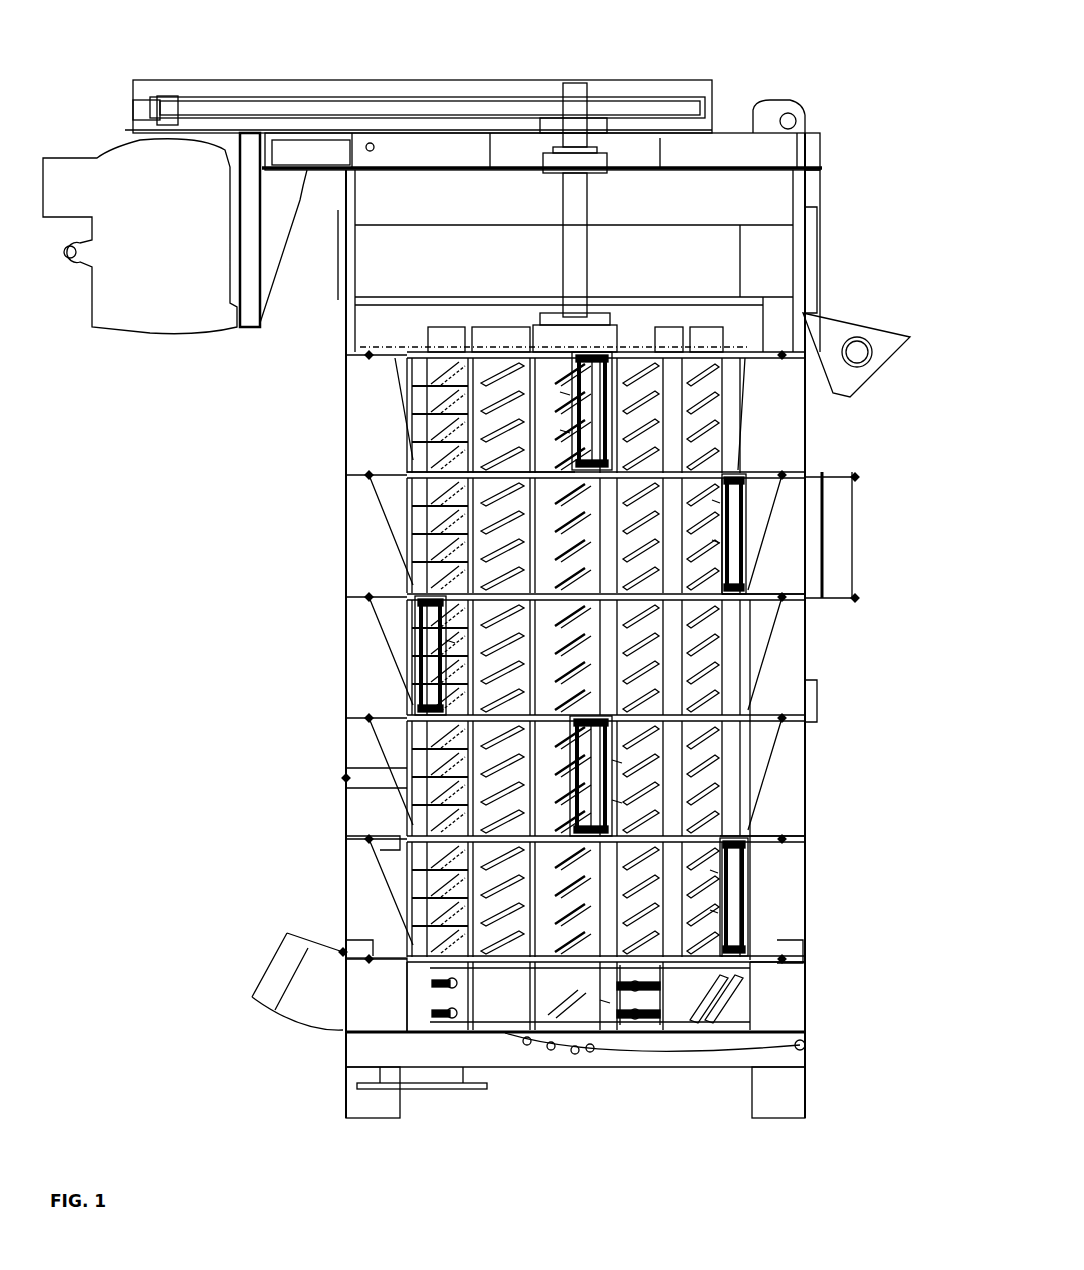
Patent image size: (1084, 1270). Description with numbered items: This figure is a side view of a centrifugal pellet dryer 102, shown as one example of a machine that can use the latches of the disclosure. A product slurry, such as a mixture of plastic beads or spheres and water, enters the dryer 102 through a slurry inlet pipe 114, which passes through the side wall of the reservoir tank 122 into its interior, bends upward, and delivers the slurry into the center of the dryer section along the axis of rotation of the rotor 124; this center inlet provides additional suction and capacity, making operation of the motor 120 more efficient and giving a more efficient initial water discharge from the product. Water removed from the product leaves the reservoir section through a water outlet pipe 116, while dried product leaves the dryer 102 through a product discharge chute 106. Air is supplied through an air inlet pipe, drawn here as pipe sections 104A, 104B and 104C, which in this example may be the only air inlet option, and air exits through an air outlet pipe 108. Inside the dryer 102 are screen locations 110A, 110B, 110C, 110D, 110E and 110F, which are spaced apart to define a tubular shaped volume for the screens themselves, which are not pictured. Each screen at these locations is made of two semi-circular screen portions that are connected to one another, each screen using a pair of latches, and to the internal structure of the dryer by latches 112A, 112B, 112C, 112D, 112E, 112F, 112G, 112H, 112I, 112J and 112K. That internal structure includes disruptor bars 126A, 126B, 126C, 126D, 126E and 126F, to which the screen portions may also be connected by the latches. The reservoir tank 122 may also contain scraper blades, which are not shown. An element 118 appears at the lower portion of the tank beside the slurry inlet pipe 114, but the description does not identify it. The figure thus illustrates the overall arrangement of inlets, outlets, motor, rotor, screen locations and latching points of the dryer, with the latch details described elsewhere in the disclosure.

The centrifugal pellet dryer 102 is at (828, 20).
The air inlet pipe 104A is at (455, 75).
The air inlet pipe 104B is at (338, 300).
The air inlet pipe 104C is at (820, 272).
The product discharge chute 106 is at (878, 330).
The air outlet pipe 108 is at (835, 488).
The screen location 110A is at (413, 425).
The screen location 110B is at (413, 562).
The screen location 110C is at (413, 680).
The screen location 110D is at (413, 809).
The screen location 110E is at (416, 912).
The screen location 110F is at (727, 1006).
The latch 112A is at (577, 372).
The latch 112B is at (578, 483).
The latch 112C is at (746, 485).
The latch 112D is at (748, 592).
The latch 112E is at (420, 602).
The latch 112F is at (570, 722).
The latch 112G is at (730, 835).
The latch 112H is at (750, 848).
The latch 112I is at (752, 953).
The latch 112J is at (612, 997).
The latch 112K is at (800, 1045).
The slurry inlet pipe 114 is at (258, 985).
The water outlet pipe 116 is at (428, 1090).
The outlet housing 118 is at (410, 1000).
The motor 120 is at (100, 152).
The reservoir tank 122 is at (787, 664).
The rotor 124 is at (592, 272).
The disruptor bar 126A is at (577, 415).
The disruptor bar 126B is at (736, 540).
The disruptor bar 126C is at (436, 642).
The disruptor bar 126D is at (620, 770).
The disruptor bar 126E is at (730, 890).
The disruptor bar 126F is at (632, 1000).